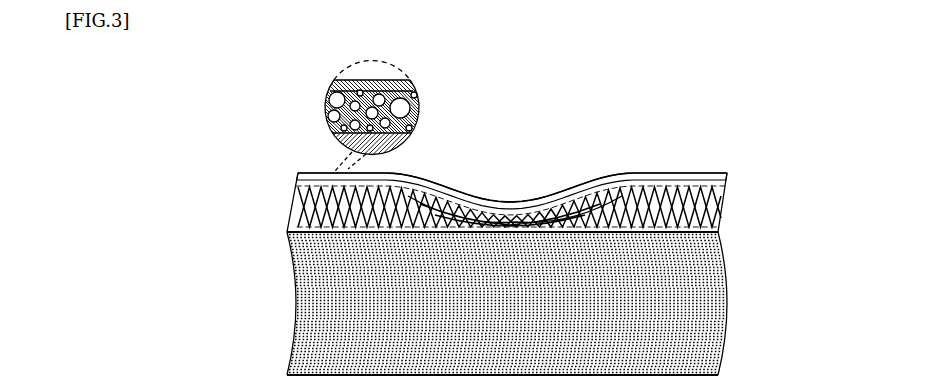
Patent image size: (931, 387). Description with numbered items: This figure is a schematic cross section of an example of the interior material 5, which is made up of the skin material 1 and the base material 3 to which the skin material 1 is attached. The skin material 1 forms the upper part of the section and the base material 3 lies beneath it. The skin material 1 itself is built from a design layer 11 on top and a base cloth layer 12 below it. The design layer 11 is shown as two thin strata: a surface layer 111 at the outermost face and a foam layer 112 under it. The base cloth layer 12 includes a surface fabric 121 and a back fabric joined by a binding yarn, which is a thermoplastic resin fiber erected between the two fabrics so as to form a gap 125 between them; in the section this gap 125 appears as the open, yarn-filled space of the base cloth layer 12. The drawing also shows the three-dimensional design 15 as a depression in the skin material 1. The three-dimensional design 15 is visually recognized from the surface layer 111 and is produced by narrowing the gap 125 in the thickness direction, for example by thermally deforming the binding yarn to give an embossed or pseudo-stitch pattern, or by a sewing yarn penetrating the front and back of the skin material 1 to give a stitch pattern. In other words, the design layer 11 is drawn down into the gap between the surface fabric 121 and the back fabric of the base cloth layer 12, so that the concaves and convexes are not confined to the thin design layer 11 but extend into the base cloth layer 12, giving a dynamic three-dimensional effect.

The skin material 1 is at (502, 155).
The base material 3 is at (735, 235).
The interior material 5 is at (302, 141).
The design layer 11 is at (655, 176).
The surface layer 111 is at (372, 85).
The foam layer 112 is at (372, 111).
The base cloth layer 12 is at (477, 182).
The surface fabric 121 is at (371, 143).
The gap 125 is at (624, 203).
The three-dimensional design 15 is at (512, 197).